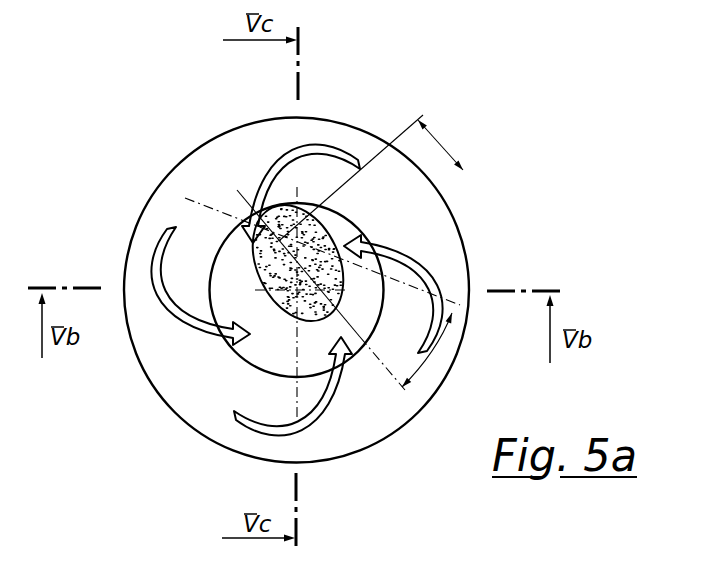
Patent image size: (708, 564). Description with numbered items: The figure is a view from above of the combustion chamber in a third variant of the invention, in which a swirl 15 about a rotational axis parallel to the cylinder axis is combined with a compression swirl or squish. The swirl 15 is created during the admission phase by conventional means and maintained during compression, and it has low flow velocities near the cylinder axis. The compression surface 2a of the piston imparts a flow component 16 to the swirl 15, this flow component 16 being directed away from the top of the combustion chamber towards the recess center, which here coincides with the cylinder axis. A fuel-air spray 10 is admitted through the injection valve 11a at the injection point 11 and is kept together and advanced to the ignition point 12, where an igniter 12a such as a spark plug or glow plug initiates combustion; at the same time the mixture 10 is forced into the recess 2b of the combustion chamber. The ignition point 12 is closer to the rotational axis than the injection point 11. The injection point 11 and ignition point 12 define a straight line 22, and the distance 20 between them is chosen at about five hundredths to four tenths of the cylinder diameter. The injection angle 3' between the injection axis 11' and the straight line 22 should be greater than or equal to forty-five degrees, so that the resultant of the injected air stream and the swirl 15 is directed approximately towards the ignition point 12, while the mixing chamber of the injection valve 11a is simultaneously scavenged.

The compression surface 2a is at (380, 423).
The recess 2b is at (275, 362).
The fuel-air spray 10 is at (270, 277).
The injection point 11 is at (293, 223).
The injection valve 11a is at (262, 253).
The injection axis 11' is at (401, 286).
The ignition point 12 is at (465, 168).
The igniter 12a is at (288, 293).
The swirl 15 is at (427, 328).
The flow component 16 is at (370, 242).
The injection angle 3' is at (419, 317).
The distance 20 is at (442, 143).
The straight line 22 is at (386, 365).